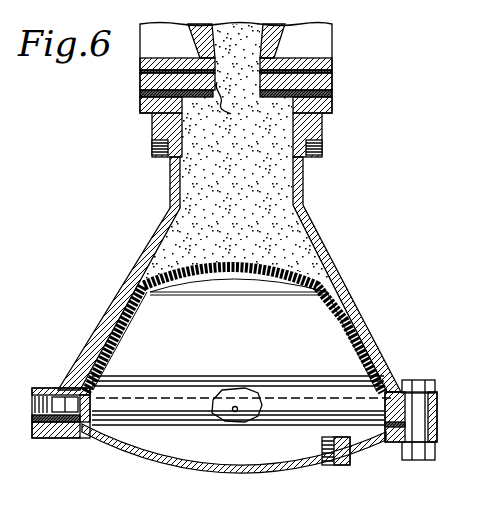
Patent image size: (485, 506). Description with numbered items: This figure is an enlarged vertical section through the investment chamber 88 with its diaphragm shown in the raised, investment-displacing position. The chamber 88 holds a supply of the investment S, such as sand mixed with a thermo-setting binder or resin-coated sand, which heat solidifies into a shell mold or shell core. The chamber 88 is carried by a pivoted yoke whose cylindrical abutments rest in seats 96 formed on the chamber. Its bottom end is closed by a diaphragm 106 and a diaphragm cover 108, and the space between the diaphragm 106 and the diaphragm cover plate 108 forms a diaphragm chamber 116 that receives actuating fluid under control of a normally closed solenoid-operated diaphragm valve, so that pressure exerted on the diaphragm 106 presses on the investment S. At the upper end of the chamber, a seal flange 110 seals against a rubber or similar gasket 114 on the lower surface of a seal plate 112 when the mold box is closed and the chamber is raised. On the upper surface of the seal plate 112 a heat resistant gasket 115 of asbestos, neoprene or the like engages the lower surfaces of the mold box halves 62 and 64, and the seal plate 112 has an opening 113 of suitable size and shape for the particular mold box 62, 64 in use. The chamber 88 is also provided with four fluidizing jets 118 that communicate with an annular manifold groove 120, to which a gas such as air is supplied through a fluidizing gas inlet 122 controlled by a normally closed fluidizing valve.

The mold box half 62 is at (143, 40).
The mold box half 64 is at (323, 40).
The investment chamber 88 is at (320, 233).
The seat 96 is at (152, 148).
The diaphragm 106 is at (282, 273).
The diaphragm cover 108 is at (260, 469).
The seal flange 110 is at (333, 107).
The seal plate 112 is at (331, 80).
The opening 113 is at (236, 107).
The gasket 114 is at (333, 95).
The heat resistant gasket 115 is at (330, 72).
The diaphragm chamber 116 is at (323, 348).
The fluidizing jet 118 is at (77, 433).
The annular manifold groove 120 is at (277, 417).
The fluidizing gas inlet 122 is at (40, 390).
The investment S is at (268, 188).